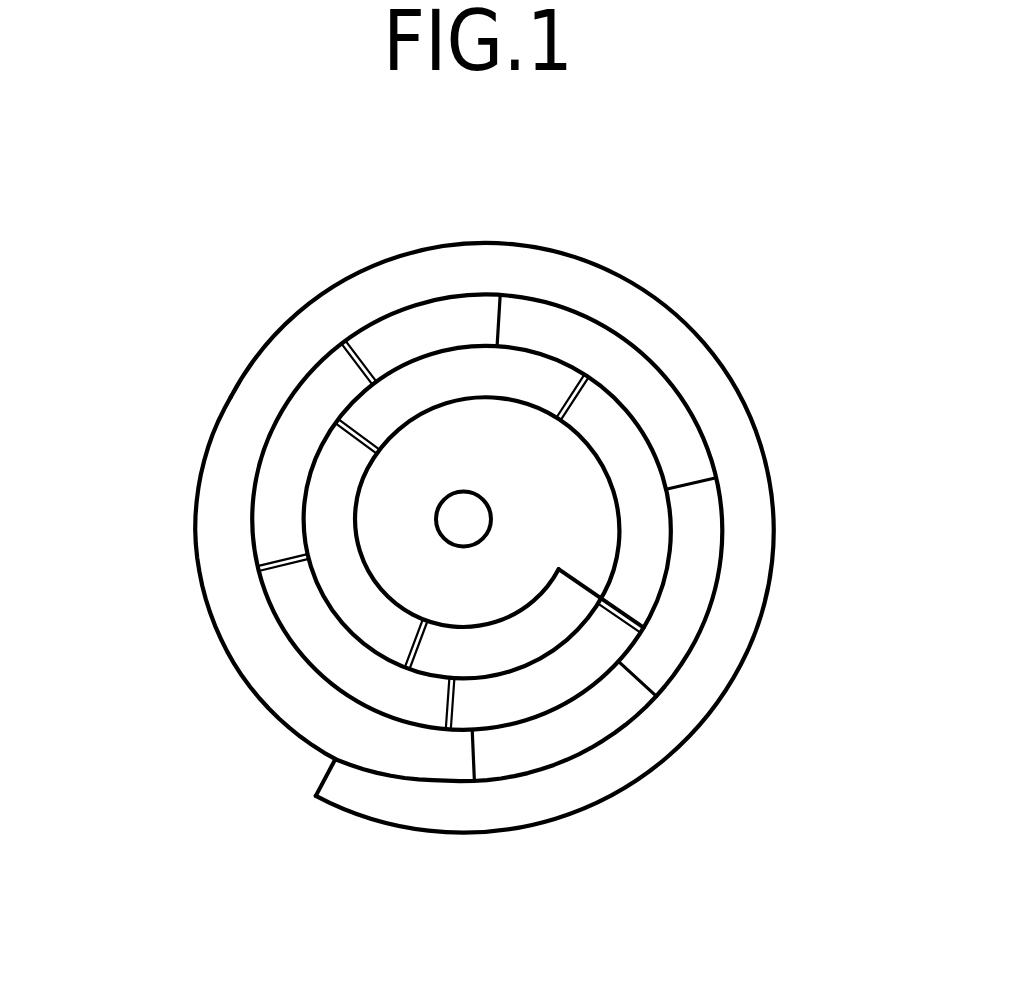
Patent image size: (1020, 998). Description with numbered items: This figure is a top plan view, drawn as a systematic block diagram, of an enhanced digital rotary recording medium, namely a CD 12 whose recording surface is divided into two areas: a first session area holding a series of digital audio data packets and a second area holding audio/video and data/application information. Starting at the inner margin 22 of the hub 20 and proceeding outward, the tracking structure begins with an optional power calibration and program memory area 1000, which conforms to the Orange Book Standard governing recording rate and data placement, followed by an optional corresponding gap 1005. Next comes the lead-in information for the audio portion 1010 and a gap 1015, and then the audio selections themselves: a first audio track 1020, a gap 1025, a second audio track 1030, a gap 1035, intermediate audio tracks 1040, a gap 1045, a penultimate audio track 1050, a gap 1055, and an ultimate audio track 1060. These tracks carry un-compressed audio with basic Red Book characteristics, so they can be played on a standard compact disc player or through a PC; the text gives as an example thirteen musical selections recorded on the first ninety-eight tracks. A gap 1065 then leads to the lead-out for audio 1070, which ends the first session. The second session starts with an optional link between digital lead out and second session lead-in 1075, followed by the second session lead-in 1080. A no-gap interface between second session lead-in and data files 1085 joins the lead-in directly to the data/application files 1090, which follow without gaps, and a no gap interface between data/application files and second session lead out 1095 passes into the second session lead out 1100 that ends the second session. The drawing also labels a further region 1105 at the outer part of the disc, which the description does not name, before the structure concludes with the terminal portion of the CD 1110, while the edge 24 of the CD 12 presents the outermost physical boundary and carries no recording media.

The CD 12 is at (747, 653).
The hub 20 is at (465, 493).
The inner margin 22 is at (559, 569).
The edge 24 is at (390, 258).
The power calibration and program memory area 1000 is at (562, 613).
The gap 1005 is at (424, 648).
The lead-in information for the audio portion 1010 is at (317, 513).
The gap 1015 is at (357, 433).
The first audio track 1020 is at (437, 384).
The gap 1025 is at (582, 400).
The second audio track 1030 is at (643, 530).
The gap 1035 is at (650, 596).
The intermediate audio tracks 1040 is at (590, 663).
The gap 1045 is at (443, 703).
The penultimate audio track 1050 is at (323, 710).
The gap 1055 is at (310, 640).
The ultimate audio track 1060 is at (290, 457).
The gap 1065 is at (357, 368).
The lead-out for audio 1070 is at (400, 343).
The link between digital lead out and second session lead-in 1075 is at (503, 309).
The second session lead-in 1080 is at (587, 347).
The no-gap interface between second session lead-in and data files 1085 is at (681, 484).
The data/application files 1090 is at (687, 503).
The no gap interface between data/application files and second session lead out 1095 is at (637, 680).
The second session lead out 1100 is at (577, 733).
The partition 1105 is at (450, 717).
The terminal portion of the CD 1110 is at (318, 714).